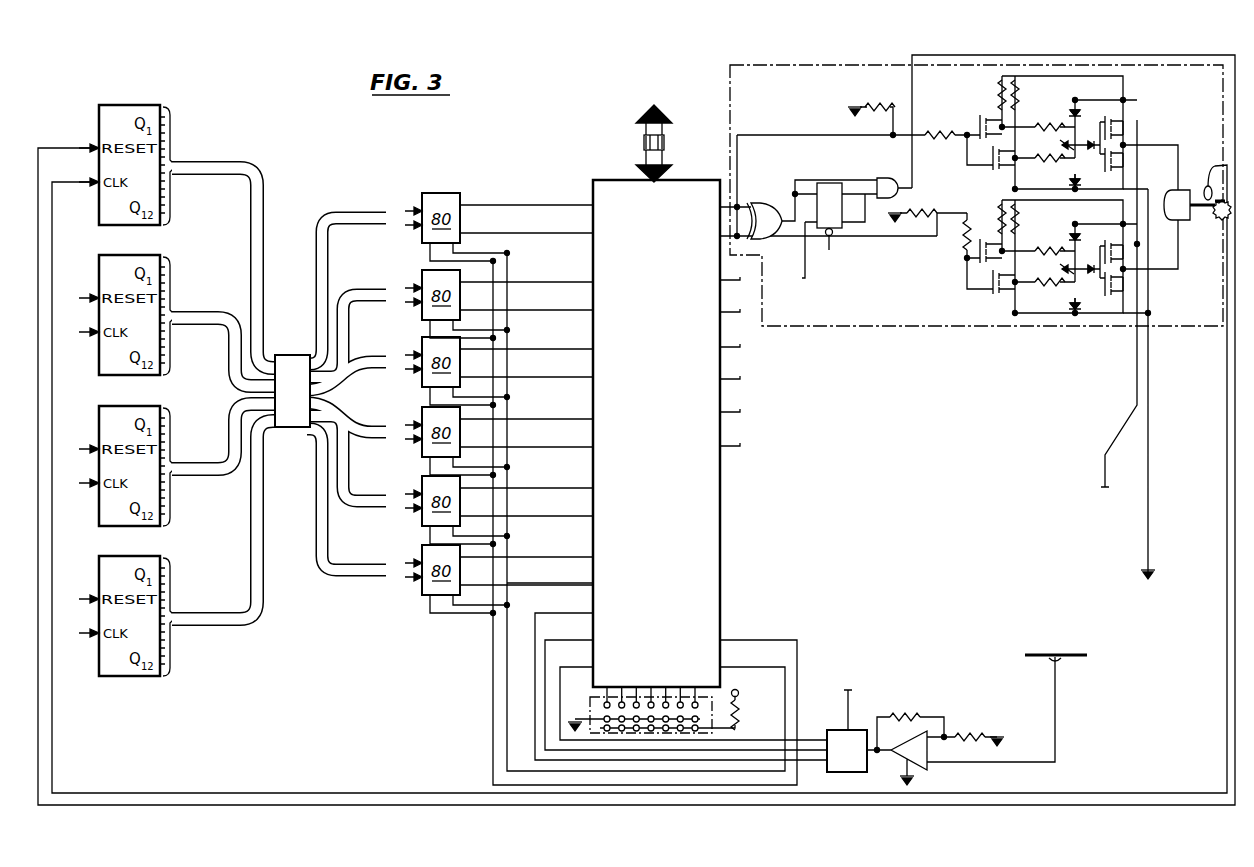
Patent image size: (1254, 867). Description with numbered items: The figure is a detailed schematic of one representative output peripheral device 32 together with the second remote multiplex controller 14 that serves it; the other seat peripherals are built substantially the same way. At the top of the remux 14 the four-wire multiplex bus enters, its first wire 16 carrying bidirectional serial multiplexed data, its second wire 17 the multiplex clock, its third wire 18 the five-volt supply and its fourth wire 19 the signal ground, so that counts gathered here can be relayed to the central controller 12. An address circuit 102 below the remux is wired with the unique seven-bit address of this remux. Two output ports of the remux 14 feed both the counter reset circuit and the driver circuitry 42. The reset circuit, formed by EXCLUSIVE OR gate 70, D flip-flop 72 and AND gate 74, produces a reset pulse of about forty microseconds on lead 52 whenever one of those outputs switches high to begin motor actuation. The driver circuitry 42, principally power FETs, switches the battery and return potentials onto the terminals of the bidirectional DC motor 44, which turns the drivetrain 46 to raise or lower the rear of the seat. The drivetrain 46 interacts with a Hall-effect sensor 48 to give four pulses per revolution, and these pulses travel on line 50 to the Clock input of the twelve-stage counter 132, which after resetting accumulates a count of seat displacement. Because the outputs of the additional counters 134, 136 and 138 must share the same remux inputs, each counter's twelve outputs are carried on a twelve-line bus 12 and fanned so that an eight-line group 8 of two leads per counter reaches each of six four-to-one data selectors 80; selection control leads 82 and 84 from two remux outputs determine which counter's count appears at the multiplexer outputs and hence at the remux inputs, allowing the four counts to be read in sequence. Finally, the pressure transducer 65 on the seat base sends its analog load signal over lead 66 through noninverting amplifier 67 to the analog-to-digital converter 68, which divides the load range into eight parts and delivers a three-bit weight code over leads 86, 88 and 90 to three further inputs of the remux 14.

The remote multiplex controller 14 is at (594, 181).
The first wire 16 is at (646, 137).
The second wire 17 is at (644, 150).
The third wire 18 is at (662, 138).
The fourth wire 19 is at (664, 150).
The peripheral device 32 is at (726, 102).
The driver circuitry 42 is at (975, 200).
The bidirectional DC motor 44 is at (1172, 194).
The drivetrain mechanism 46 is at (1220, 218).
The Hall-effect sensor 48 is at (1205, 189).
The sensor output line 50 is at (76, 184).
The reset lead 52 is at (76, 150).
The pressure transducer 65 is at (1069, 654).
The analog signal lead 66 is at (968, 764).
The noninverting amplifier 67 is at (912, 744).
The analog-to-digital converter 68 is at (836, 725).
The EXCLUSIVE OR gate 70 is at (772, 206).
The D flip-flop 72 is at (823, 240).
The AND gate 74 is at (893, 177).
The 4-to-1 data selector 80 is at (499, 404).
The selection control lead 82 is at (504, 640).
The selection control lead 84 is at (492, 640).
The digital code lead 86 is at (560, 732).
The digital code lead 88 is at (545, 714).
The digital code lead 90 is at (535, 696).
The address circuit 102 is at (588, 704).
The central controller 12 is at (225, 393).
The 8-bit bus 8 is at (356, 394).
The 12-stage counter 132 is at (110, 107).
The additional counter 134 is at (110, 257).
The additional counter 136 is at (110, 408).
The additional counter 138 is at (110, 558).